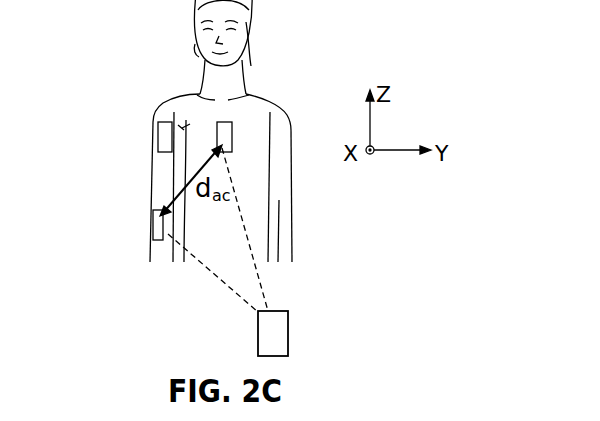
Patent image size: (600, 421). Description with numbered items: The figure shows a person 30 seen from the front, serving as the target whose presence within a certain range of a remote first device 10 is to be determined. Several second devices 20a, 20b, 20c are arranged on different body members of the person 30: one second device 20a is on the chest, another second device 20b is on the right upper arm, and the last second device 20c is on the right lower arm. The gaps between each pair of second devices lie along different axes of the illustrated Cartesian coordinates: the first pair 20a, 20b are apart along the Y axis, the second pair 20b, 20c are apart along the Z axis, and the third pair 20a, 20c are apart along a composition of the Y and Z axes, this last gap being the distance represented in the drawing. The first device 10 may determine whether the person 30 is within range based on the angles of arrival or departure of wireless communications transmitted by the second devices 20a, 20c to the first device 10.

The first device 10 is at (277, 333).
The second device 20a is at (220, 143).
The second device 20b is at (166, 137).
The second device 20c is at (157, 237).
The person 30 is at (283, 210).